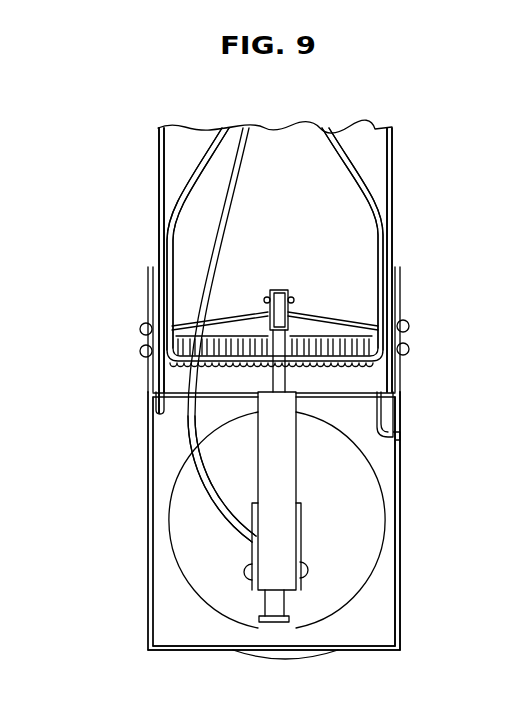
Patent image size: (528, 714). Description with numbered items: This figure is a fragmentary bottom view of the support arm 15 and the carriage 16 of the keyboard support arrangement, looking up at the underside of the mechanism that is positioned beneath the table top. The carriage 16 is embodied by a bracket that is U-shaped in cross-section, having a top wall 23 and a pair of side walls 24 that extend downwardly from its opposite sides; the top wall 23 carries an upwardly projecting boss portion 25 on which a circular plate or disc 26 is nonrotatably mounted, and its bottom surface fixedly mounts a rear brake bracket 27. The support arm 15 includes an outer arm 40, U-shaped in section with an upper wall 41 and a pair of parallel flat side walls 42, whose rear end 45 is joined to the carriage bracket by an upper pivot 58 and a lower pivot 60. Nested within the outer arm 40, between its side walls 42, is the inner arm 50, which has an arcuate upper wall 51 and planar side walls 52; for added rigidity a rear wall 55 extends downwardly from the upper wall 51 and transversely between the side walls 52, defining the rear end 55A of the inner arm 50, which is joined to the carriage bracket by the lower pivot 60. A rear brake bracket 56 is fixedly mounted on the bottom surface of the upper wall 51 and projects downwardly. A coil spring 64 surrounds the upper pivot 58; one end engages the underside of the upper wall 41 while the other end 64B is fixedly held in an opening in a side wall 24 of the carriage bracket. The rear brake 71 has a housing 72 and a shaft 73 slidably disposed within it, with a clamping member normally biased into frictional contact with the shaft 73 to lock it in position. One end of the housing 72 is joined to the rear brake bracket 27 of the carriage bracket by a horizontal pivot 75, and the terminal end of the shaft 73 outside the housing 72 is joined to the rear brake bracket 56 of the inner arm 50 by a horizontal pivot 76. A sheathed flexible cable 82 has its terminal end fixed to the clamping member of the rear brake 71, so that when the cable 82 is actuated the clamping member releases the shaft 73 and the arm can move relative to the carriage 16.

The support arm 15 is at (134, 221).
The carriage 16 is at (128, 540).
The top wall 23 is at (171, 644).
The side walls 24 is at (396, 530).
The boss portion 25 is at (321, 502).
The circular plate or disc 26 is at (292, 655).
The rear brake bracket 27 is at (386, 558).
The outer arm 40 is at (398, 189).
The upper wall 41 is at (168, 166).
The side walls 42 is at (160, 148).
The rear end 45 is at (406, 242).
The inner arm 50 is at (354, 145).
The upper wall 51 is at (278, 184).
The side walls 52 is at (183, 197).
The rear wall 55 is at (362, 364).
The rear end 55A is at (210, 379).
The rear brake bracket 56 is at (277, 288).
The upper pivot 58 is at (405, 346).
The lower pivot 60 is at (404, 321).
The coil spring 64 is at (230, 332).
The other end 64B is at (382, 425).
The rear brake 71 is at (228, 474).
The housing 72 is at (263, 452).
The shaft 73 is at (265, 612).
The pivot 75 is at (305, 571).
The pivot 76 is at (294, 300).
The flexible cable 82 is at (218, 237).